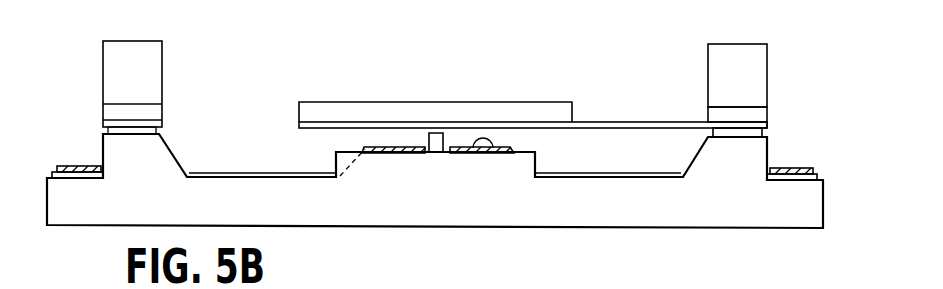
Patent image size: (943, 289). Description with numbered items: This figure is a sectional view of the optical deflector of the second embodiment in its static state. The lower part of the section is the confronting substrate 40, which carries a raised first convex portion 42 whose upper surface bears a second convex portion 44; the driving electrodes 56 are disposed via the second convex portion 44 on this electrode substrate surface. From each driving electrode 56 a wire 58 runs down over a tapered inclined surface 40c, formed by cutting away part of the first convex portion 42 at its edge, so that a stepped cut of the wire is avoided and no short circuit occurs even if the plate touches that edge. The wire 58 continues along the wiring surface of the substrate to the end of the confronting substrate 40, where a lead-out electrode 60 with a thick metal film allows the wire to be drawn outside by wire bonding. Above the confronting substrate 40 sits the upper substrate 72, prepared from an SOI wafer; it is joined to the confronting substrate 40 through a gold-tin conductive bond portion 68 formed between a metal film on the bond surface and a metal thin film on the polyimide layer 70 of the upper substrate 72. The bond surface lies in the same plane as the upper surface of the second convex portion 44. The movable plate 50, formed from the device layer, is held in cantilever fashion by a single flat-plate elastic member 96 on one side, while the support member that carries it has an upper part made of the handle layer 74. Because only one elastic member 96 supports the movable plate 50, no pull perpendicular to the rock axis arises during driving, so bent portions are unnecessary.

The confronting substrate 40 is at (749, 212).
The tapered inclined surface 40c is at (510, 149).
The first convex portion 42 is at (378, 165).
The second convex portion 44 is at (436, 145).
The movable plate 50 is at (441, 114).
The driving electrode 56 is at (492, 150).
The wire 58 is at (643, 182).
The lead-out electrode 60 is at (800, 167).
The conductive bond portion 68 is at (768, 135).
The polyimide layer 70 is at (768, 126).
The upper substrate 72 is at (768, 108).
The handle layer 74 is at (768, 63).
The elastic member 96 is at (637, 121).